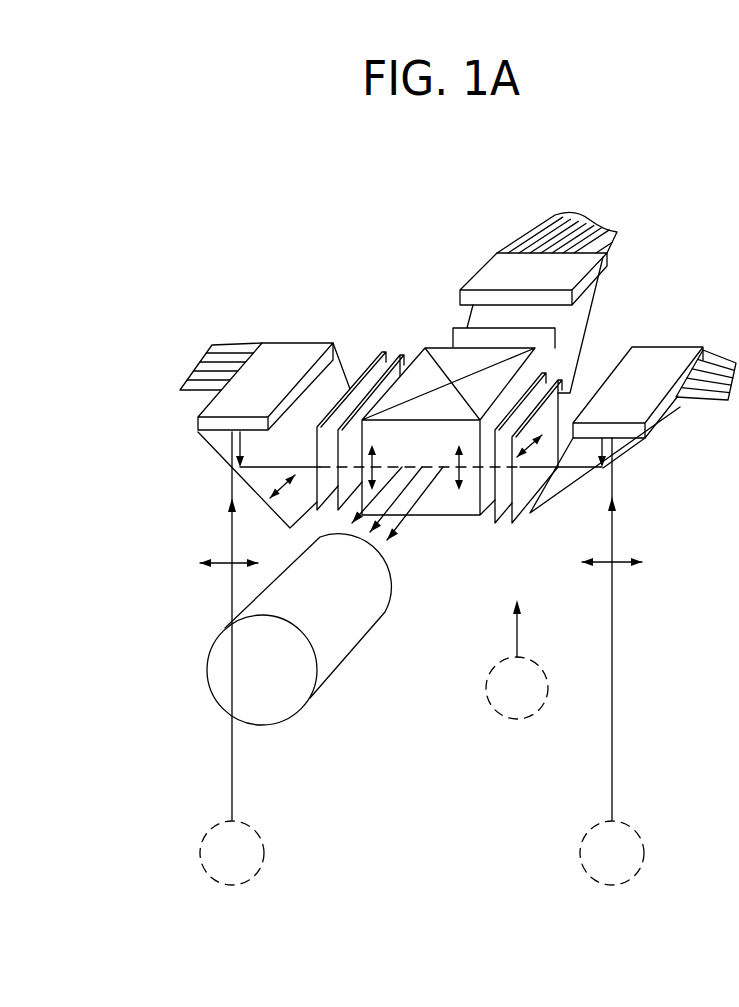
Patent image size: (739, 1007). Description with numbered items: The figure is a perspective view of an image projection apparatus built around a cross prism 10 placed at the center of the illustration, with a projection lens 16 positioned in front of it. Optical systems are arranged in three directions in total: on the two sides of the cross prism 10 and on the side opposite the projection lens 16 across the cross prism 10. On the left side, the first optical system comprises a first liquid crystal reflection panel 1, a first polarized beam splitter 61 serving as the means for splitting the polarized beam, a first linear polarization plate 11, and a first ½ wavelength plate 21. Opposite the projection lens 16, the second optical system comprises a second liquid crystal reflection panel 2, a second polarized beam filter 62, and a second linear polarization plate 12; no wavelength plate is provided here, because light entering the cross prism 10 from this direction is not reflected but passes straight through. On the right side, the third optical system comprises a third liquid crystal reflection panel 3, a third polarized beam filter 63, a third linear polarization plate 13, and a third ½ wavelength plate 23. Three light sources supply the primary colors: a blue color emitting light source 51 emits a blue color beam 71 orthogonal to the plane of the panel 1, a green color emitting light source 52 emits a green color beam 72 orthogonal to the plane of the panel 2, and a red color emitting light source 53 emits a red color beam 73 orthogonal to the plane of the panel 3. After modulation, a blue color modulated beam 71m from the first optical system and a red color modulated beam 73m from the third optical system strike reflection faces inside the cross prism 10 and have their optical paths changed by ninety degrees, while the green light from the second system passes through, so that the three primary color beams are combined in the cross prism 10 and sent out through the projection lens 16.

The first liquid crystal reflection panel 1 is at (273, 353).
The second liquid crystal reflection panel 2 is at (472, 283).
The third liquid crystal reflection panel 3 is at (658, 350).
The first linear polarization plate 11 is at (372, 355).
The second linear polarization plate 12 is at (452, 327).
The third linear polarization plate 13 is at (512, 523).
The first ½ wavelength plate 21 is at (390, 353).
The third ½ wavelength plate 23 is at (495, 523).
The cross prism 10 is at (430, 517).
The projection lens 16 is at (350, 662).
The first polarized beam splitter 61 is at (220, 443).
The second polarized beam filter 62 is at (587, 313).
The third polarized beam filter 63 is at (640, 456).
The blue color beam 71 is at (232, 763).
The green color beam 72 is at (517, 628).
The red color beam 73 is at (612, 763).
The blue color modulated beam 71m is at (260, 482).
The red color modulated beam 73m is at (577, 473).
The blue color emitting light source 51 is at (262, 846).
The green color emitting light source 52 is at (512, 718).
The red color emitting light source 53 is at (643, 846).